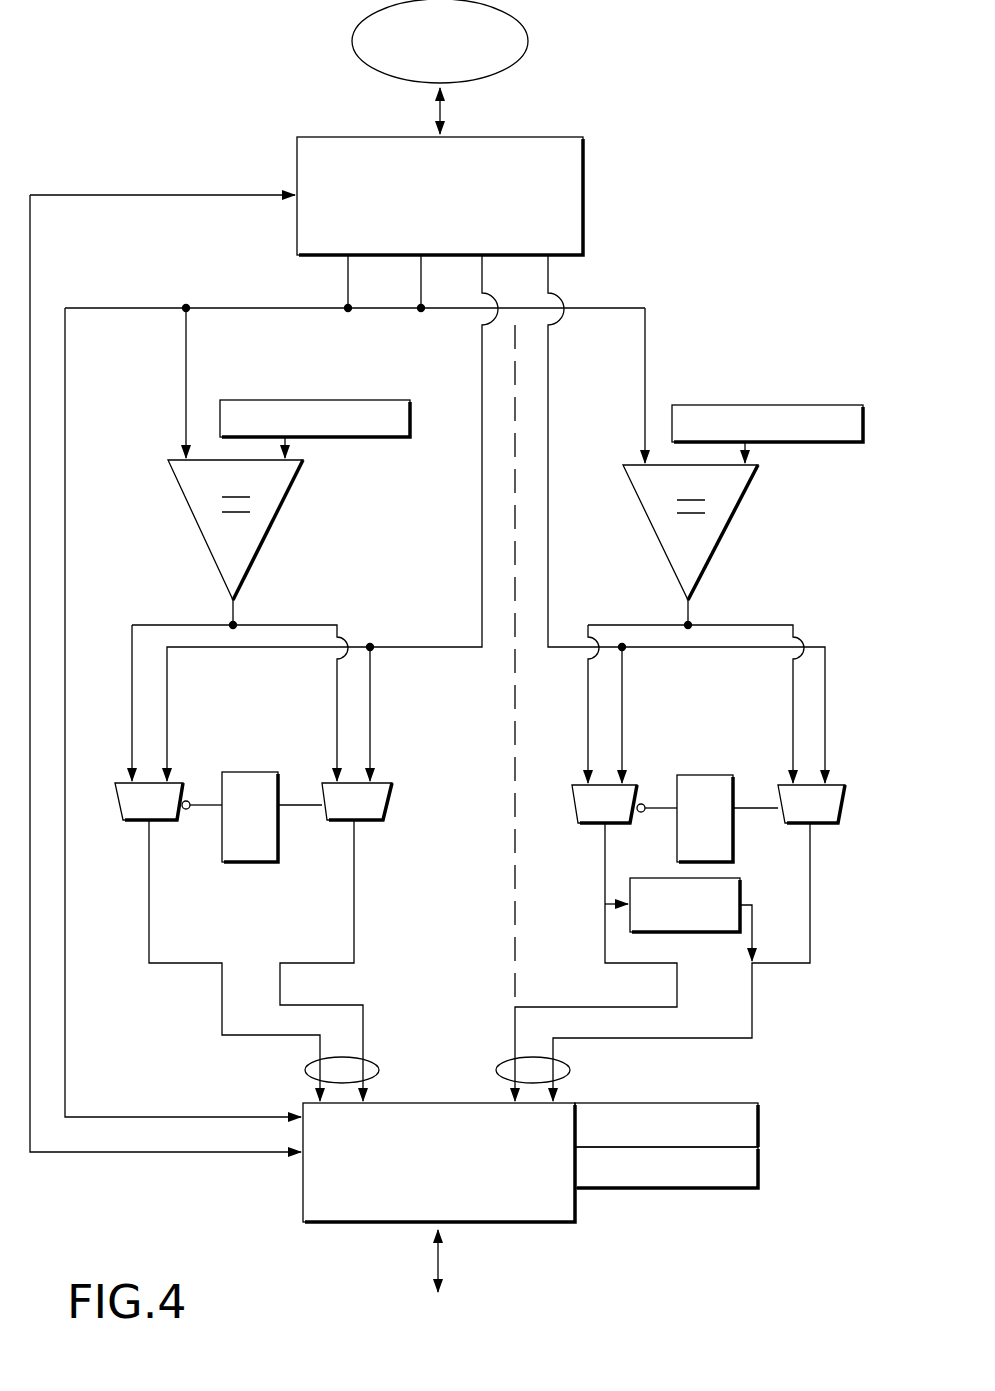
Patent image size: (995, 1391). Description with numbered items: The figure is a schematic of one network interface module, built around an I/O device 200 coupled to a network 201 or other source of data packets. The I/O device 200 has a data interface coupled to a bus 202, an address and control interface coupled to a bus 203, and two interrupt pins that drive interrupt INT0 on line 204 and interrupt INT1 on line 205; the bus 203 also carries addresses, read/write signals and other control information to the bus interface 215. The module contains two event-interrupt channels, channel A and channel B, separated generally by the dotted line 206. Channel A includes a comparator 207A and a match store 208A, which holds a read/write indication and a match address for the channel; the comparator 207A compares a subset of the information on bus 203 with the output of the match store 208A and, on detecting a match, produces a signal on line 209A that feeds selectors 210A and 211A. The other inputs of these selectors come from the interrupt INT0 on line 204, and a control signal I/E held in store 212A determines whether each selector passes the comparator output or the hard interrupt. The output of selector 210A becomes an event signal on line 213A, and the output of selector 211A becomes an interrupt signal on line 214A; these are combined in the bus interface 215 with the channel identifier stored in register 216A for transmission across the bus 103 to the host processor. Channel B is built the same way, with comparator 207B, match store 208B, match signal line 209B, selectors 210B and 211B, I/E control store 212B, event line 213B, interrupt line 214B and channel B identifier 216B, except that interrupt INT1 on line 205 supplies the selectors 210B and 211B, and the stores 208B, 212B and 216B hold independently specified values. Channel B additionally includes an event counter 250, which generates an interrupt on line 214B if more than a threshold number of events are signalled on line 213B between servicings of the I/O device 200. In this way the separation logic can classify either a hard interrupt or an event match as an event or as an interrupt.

The network 201 is at (527, 30).
The I/O device 200 is at (585, 180).
The bus 202 is at (198, 195).
The bus 203 is at (152, 308).
The line 204 is at (490, 296).
The line 205 is at (548, 280).
The dotted line 206 is at (516, 904).
The comparator 207A is at (290, 490).
The comparator 207B is at (728, 524).
The match store 208A is at (325, 400).
The match store 208B is at (780, 405).
The line 209A is at (290, 625).
The line 209B is at (748, 625).
The selector 210A is at (112, 812).
The selector 210B is at (570, 797).
The selector 211A is at (387, 822).
The selector 211B is at (843, 812).
The store 212A is at (252, 772).
The I/E control store 212B is at (700, 775).
The line 213A is at (181, 963).
The line 213B is at (618, 1007).
The line 214A is at (355, 923).
The line 214B is at (752, 998).
The bus interface 215 is at (545, 1224).
The register 216A is at (758, 1112).
The channel B identifier 216B is at (760, 1175).
The event counter 250 is at (742, 887).
The bus 103 is at (435, 1253).